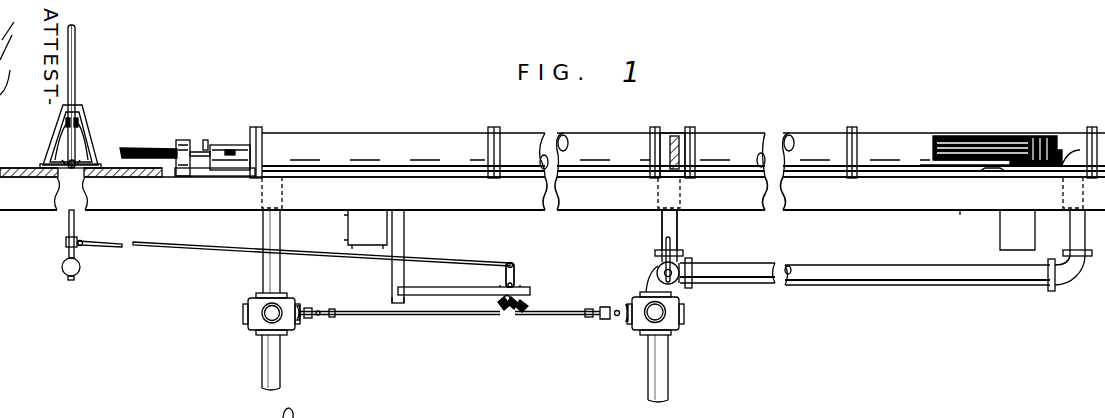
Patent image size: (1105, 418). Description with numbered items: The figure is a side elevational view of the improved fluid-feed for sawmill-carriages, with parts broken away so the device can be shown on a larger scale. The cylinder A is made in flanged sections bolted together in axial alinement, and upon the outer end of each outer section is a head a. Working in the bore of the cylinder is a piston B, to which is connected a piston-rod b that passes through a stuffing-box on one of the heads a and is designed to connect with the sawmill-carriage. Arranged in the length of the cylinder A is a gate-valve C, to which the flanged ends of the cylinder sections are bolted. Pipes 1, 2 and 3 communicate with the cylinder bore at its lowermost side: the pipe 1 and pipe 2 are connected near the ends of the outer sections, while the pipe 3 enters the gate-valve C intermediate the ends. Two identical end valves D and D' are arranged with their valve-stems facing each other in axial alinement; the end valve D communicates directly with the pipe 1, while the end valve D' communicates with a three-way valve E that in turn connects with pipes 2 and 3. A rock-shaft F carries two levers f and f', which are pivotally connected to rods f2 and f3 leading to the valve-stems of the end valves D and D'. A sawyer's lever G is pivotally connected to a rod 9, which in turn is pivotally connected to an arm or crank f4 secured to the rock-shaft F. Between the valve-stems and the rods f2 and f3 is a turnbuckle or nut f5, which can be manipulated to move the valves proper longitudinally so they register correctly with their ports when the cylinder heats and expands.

The sawyer's lever G is at (75, 68).
The head a is at (252, 130).
The piston-rod b is at (140, 150).
The cylinder A is at (330, 145).
The gate-valve C is at (668, 130).
The piston B is at (1040, 145).
The pipe 1 is at (278, 240).
The rod 9 is at (200, 250).
The rock-shaft F is at (509, 315).
The arm or crank f4 is at (520, 252).
The lever f is at (475, 331).
The rod f2 is at (385, 315).
The turnbuckle or nut f5 is at (340, 287).
The rod f3 is at (578, 313).
The lever f' is at (536, 329).
The end valve D is at (250, 341).
The end valve D' is at (669, 347).
The three-way valve E is at (657, 273).
The pipe 3 is at (668, 225).
The pipe 2 is at (747, 272).